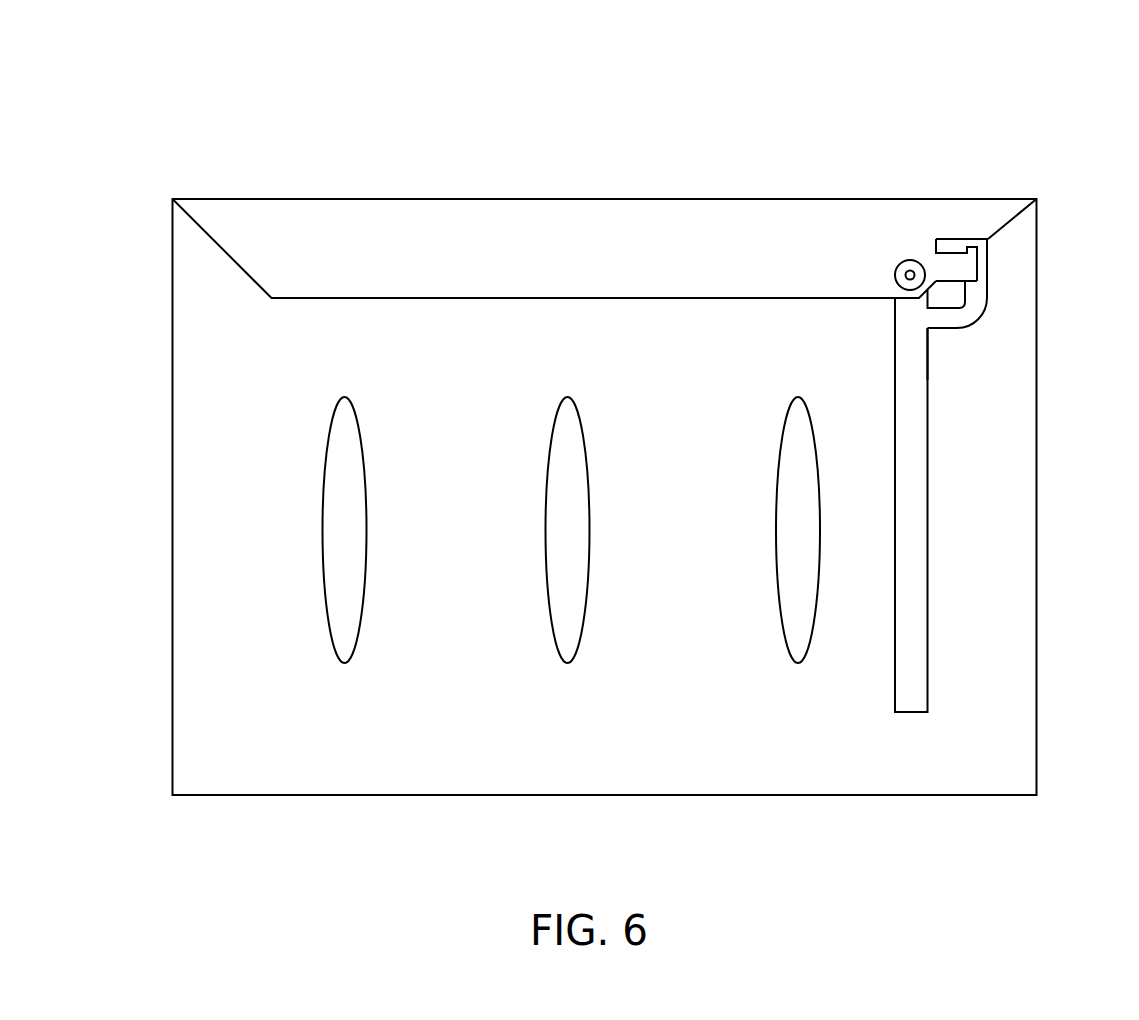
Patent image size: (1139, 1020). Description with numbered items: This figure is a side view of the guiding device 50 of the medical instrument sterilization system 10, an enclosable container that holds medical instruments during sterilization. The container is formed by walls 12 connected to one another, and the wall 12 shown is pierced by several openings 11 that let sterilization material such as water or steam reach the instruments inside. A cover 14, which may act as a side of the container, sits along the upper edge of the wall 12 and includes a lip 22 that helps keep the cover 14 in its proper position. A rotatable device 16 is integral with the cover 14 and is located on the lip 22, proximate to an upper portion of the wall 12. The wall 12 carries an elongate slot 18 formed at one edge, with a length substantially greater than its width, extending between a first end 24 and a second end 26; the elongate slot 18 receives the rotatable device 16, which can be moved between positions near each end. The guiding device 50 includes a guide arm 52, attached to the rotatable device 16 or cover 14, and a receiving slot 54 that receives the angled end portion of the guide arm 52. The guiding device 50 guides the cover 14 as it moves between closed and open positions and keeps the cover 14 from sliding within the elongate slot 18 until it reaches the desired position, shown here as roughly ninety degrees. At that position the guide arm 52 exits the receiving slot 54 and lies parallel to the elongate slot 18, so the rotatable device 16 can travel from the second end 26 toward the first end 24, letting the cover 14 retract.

The medical instrument sterilization system 10 is at (119, 98).
The openings 11 is at (322, 577).
The wall 12 is at (1003, 527).
The cover 14 is at (672, 198).
The rotatable device 16 is at (902, 262).
The elongate slot 18 is at (903, 467).
The lip 22 is at (274, 247).
The first end 24 is at (912, 684).
The second end 26 is at (918, 338).
The guiding device 50 is at (1010, 315).
The guide arm 52 is at (962, 268).
The receiving slot 54 is at (975, 297).